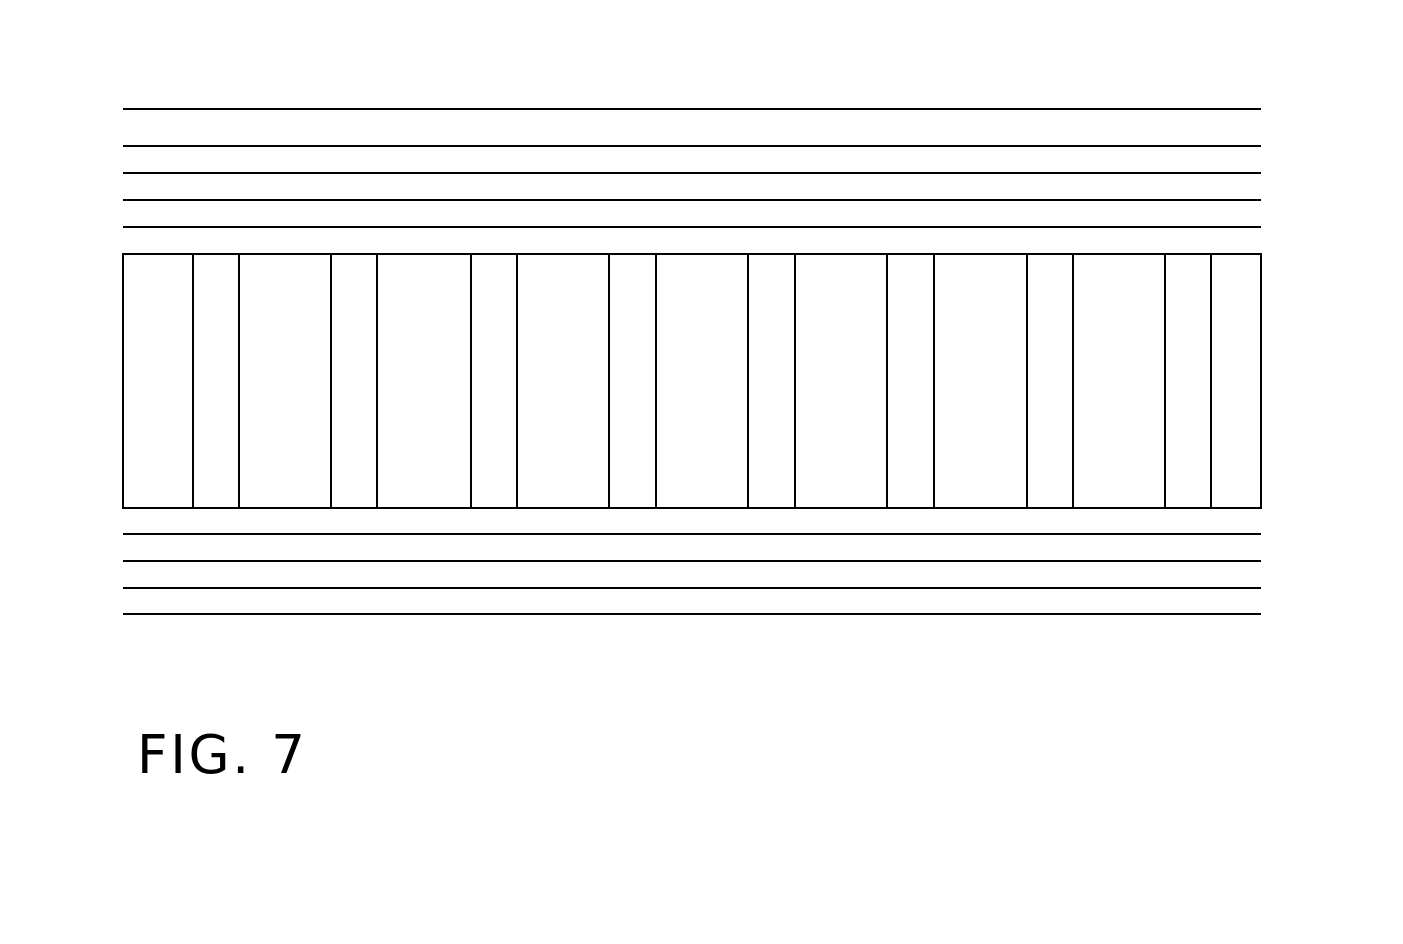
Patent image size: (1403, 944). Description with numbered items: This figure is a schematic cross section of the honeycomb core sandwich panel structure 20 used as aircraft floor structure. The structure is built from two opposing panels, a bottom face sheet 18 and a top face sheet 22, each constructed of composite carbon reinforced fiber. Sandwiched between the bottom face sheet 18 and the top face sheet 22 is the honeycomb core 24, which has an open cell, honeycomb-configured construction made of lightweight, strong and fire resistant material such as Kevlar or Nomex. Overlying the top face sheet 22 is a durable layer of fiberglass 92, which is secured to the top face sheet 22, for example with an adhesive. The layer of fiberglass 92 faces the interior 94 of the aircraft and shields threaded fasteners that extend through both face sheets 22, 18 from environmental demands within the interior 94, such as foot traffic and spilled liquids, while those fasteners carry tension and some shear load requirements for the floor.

The interior 94 is at (675, 46).
The layer of fiberglass 92 is at (187, 108).
The top face sheet 22 is at (1270, 253).
The honeycomb core sandwich panel structure 20 is at (719, 459).
The honeycomb core 24 is at (303, 401).
The bottom face sheet 18 is at (1270, 507).